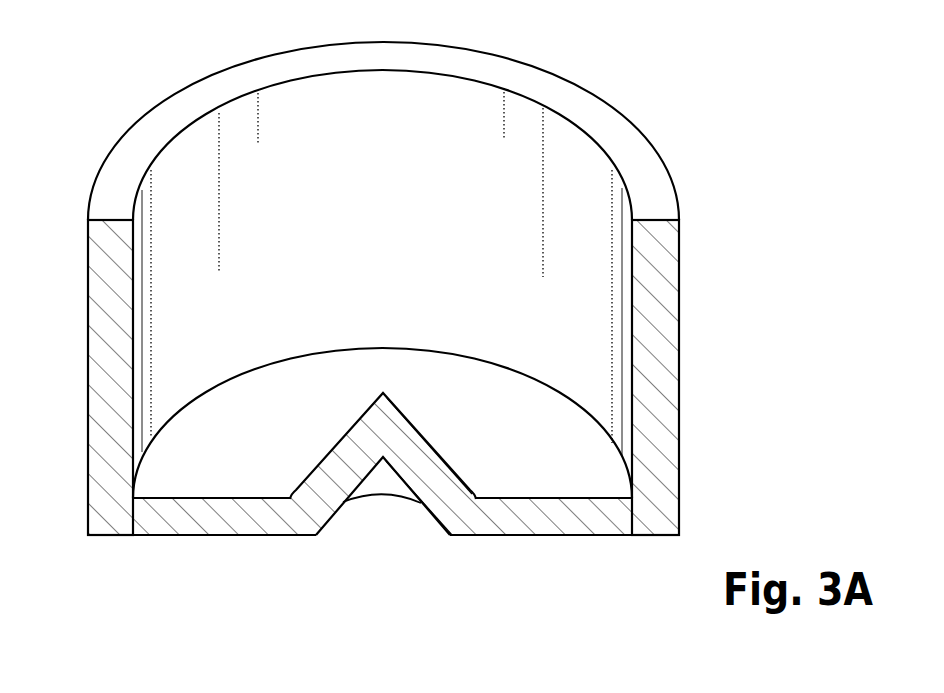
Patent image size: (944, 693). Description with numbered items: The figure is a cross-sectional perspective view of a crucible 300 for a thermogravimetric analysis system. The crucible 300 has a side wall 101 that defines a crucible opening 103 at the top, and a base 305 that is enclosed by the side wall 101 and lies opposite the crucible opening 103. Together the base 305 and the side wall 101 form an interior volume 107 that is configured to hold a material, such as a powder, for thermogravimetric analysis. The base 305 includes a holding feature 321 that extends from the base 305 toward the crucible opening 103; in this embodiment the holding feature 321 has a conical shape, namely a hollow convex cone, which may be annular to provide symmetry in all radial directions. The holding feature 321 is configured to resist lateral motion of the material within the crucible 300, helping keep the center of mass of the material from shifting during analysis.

The crucible 300 is at (84, 84).
The side wall 101 is at (98, 260).
The crucible opening 103 is at (509, 90).
The interior volume 107 is at (390, 214).
The base 305 is at (167, 536).
The holding feature 321 is at (357, 452).